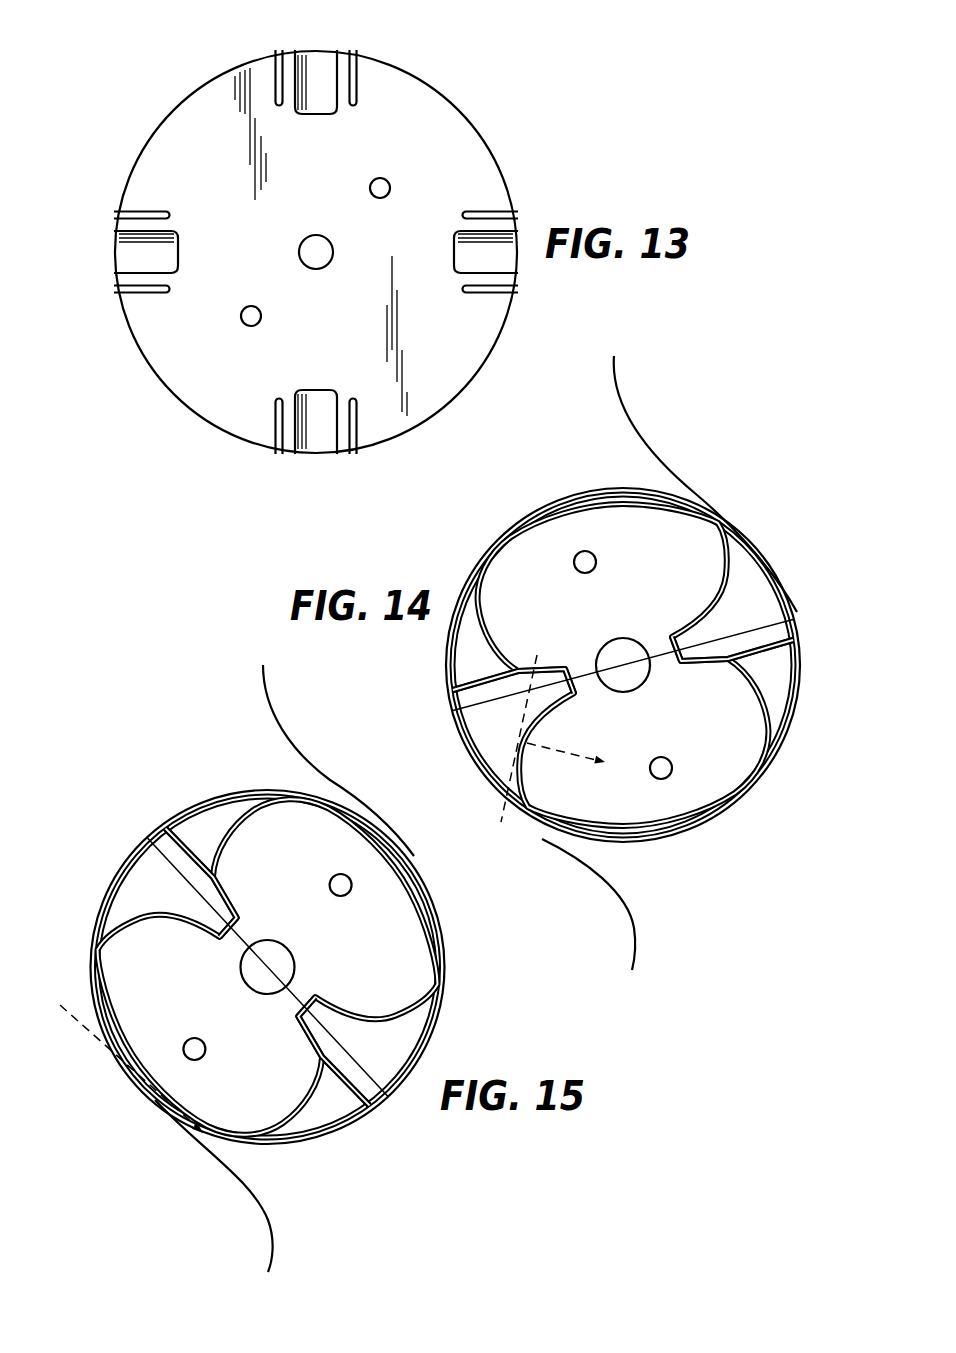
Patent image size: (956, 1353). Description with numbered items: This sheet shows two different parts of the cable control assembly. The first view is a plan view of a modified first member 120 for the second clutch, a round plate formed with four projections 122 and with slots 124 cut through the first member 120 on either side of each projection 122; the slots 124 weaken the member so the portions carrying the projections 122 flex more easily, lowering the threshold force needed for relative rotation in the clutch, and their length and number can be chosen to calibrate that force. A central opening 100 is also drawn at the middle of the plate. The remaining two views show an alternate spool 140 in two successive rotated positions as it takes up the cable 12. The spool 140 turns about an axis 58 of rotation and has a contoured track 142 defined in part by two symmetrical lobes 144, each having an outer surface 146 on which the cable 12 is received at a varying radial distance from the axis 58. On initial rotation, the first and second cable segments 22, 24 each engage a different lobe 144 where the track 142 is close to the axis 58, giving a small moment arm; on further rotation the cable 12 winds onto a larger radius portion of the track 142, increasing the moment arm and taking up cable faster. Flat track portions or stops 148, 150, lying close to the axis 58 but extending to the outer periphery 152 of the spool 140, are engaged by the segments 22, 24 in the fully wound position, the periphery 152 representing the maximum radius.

In FIG. 14, the cable 12 is at (669, 663).
In FIG. 15, the cable 12 is at (284, 968).
In FIG. 14, the first cable segment 22 is at (654, 452).
In FIG. 15, the first cable segment 22 is at (268, 690).
In FIG. 14, the second cable segment 24 is at (633, 912).
In FIG. 15, the second cable segment 24 is at (264, 1250).
In FIG. 14, the axis of rotation 58 is at (623, 665).
In FIG. 15, the axis of rotation 58 is at (293, 962).
In FIG. 13, the central opening 100 is at (321, 269).
In FIG. 13, the first member 120 is at (303, 255).
In FIG. 13, the projections 122 is at (319, 55).
In FIG. 13, the slots 124 is at (352, 57).
In FIG. 14, the spool 140 is at (623, 644).
In FIG. 15, the spool 140 is at (267, 974).
In FIG. 14, the contoured track 142 is at (798, 650).
In FIG. 15, the contoured track 142 is at (267, 966).
In FIG. 14, the lobes 144 is at (627, 530).
In FIG. 15, the lobes 144 is at (402, 950).
In FIG. 14, the outer surface 146 is at (590, 512).
In FIG. 15, the outer surface 146 is at (262, 805).
In FIG. 14, the flat track portion or stop 148 is at (478, 690).
In FIG. 15, the flat track portion or stop 148 is at (173, 850).
In FIG. 14, the flat track portion or stop 150 is at (790, 632).
In FIG. 15, the flat track portion or stop 150 is at (378, 1098).
In FIG. 14, the outer periphery 152 is at (799, 700).
In FIG. 15, the outer periphery 152 is at (438, 1018).